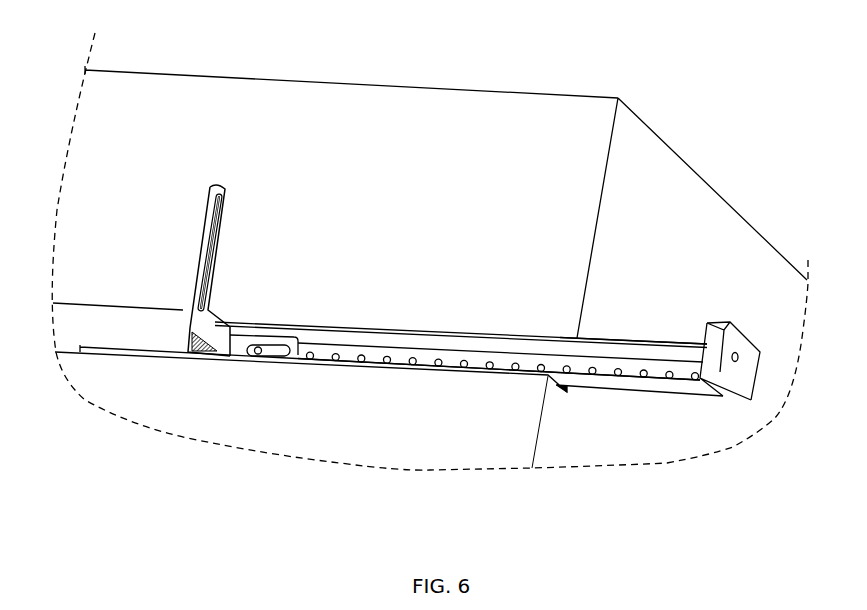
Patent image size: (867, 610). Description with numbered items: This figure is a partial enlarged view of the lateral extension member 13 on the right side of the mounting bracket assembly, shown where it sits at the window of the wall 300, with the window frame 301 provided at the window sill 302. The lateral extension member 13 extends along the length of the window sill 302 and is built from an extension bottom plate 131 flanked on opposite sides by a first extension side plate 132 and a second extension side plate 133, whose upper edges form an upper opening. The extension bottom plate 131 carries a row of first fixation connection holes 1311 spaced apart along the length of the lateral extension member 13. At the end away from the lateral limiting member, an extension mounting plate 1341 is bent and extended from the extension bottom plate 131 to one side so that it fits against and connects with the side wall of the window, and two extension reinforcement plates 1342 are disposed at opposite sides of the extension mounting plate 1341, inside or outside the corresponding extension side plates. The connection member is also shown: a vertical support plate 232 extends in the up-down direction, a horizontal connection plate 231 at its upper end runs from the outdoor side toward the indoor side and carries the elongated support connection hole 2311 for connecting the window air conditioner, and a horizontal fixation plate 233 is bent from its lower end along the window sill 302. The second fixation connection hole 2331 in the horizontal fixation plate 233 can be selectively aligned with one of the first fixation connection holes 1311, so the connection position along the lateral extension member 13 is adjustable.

The lateral extension member 13 is at (653, 382).
The extension bottom plate 131 is at (452, 357).
The first fixation connection hole 1311 is at (362, 357).
The first extension side plate 132 is at (655, 345).
The second extension side plate 133 is at (603, 380).
The extension mounting plate 1341 is at (747, 373).
The extension reinforcement plate 1342 is at (730, 390).
The horizontal connection plate 231 is at (212, 247).
The support connection hole 2311 is at (219, 187).
The vertical support plate 232 is at (212, 333).
The horizontal fixation plate 233 is at (245, 343).
The second fixation connection hole 2331 is at (272, 356).
The wall 300 is at (657, 172).
The window frame 301 is at (135, 393).
The window sill 302 is at (508, 123).